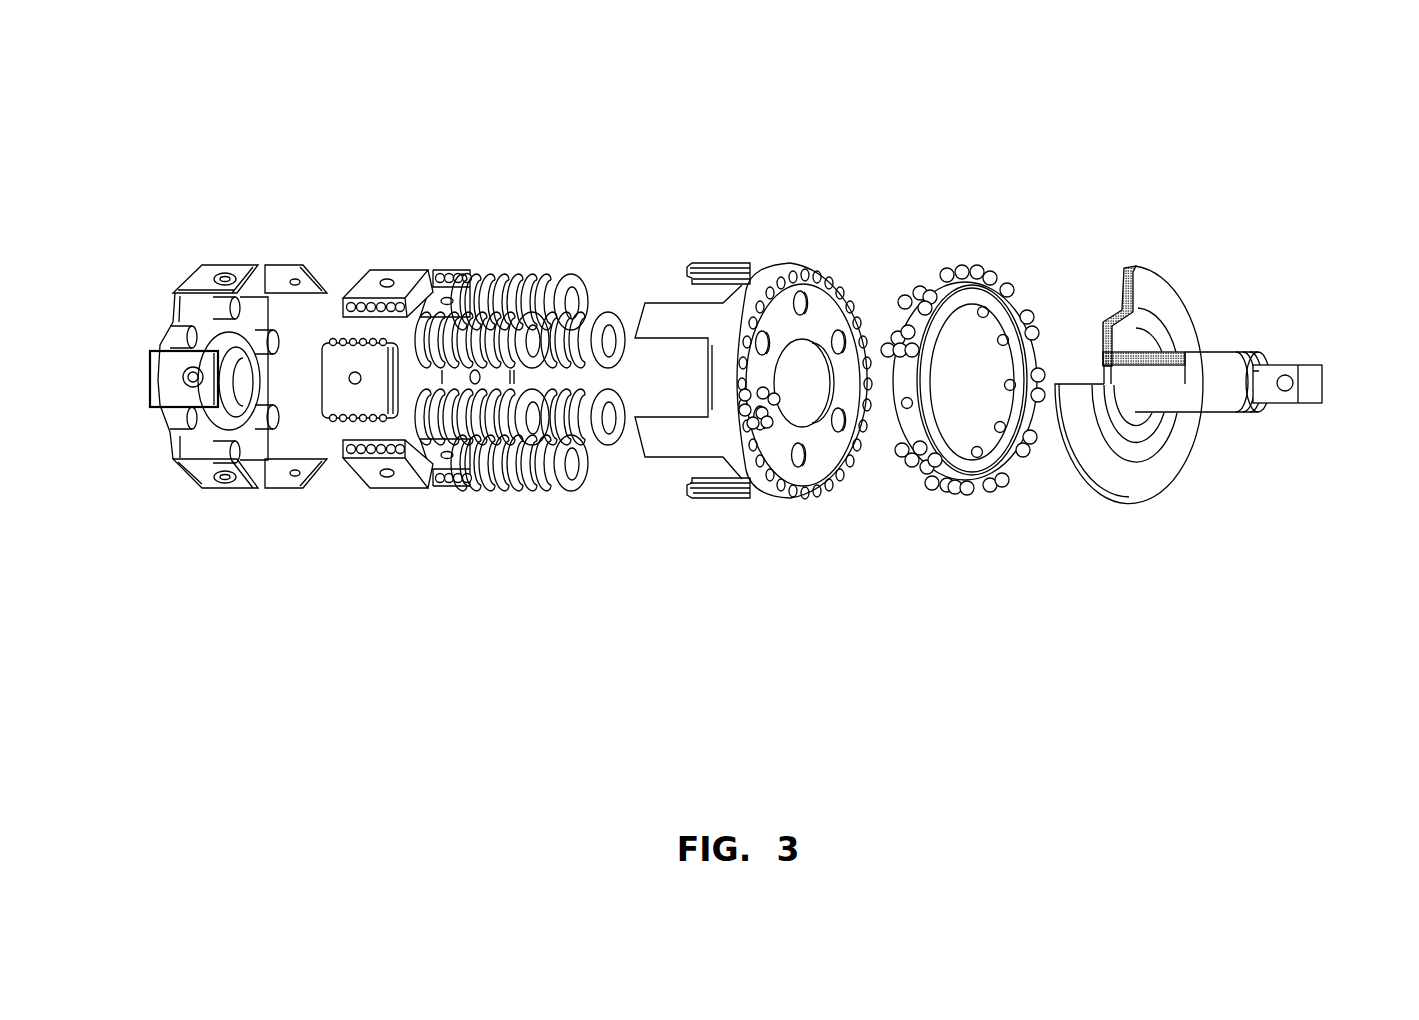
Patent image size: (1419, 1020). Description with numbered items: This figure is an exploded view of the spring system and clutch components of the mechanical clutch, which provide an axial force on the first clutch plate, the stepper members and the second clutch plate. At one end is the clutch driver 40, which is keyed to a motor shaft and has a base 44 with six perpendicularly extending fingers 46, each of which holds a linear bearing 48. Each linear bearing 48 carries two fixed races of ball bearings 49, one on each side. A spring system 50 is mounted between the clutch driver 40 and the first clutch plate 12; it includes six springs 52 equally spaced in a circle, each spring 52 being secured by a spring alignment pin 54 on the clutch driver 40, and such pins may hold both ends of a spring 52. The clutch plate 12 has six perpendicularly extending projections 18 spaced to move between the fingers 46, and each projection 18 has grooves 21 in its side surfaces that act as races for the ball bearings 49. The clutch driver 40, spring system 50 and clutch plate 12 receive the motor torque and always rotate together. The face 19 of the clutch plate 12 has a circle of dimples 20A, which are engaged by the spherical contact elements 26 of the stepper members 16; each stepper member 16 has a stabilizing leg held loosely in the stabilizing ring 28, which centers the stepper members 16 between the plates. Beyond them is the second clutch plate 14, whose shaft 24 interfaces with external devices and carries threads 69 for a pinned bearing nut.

The clutch plate 12 is at (766, 353).
The clutch plate 14 is at (1218, 329).
The stepper member 16 is at (981, 326).
The projection 18 is at (667, 317).
The face 19 is at (830, 495).
The dimple 20A is at (768, 290).
The groove 21 is at (695, 497).
The shaft 24 is at (1203, 387).
The contact element 26 is at (912, 470).
The stabilizing ring 28 is at (1018, 305).
The clutch driver 40 is at (196, 436).
The base 44 is at (187, 311).
The finger 46 is at (198, 272).
The linear bearing 48 is at (382, 268).
The ball bearing 49 is at (366, 486).
The spring system 50 is at (508, 503).
The spring 52 is at (545, 272).
The spring alignment pin 54 is at (273, 425).
The threads 69 is at (1270, 352).